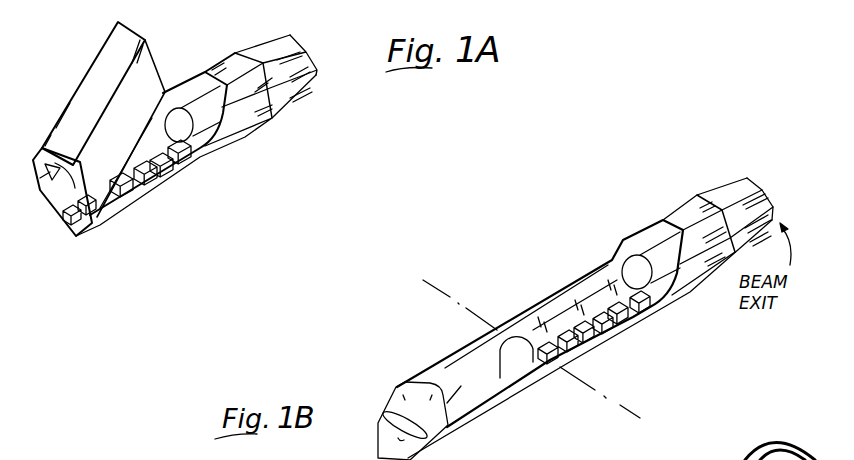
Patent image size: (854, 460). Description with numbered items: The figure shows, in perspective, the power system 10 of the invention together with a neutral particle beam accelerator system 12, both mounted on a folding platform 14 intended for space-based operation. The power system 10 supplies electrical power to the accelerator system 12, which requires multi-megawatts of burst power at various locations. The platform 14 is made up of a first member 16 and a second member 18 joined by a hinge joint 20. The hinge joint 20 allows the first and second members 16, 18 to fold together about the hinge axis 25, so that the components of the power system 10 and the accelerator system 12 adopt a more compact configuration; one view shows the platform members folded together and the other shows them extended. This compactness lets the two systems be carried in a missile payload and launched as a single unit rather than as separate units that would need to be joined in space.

The power system 10 is at (465, 342).
The neutral particle beam accelerator system 12 is at (622, 240).
The platform 14 is at (642, 313).
The first member 16 is at (442, 380).
The second member 18 is at (685, 215).
The hinge joint 20 is at (550, 395).
The hinge axis 25 is at (620, 405).